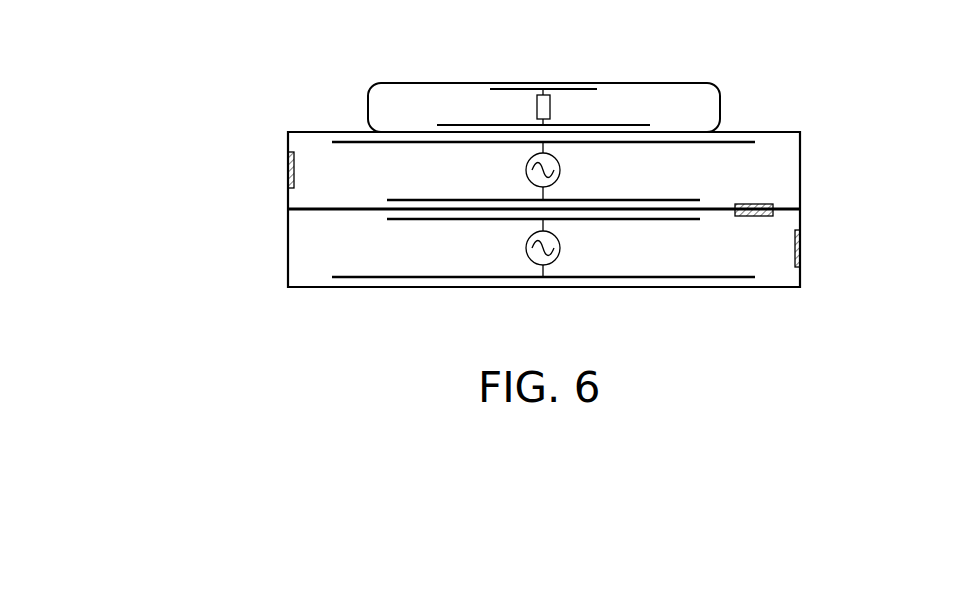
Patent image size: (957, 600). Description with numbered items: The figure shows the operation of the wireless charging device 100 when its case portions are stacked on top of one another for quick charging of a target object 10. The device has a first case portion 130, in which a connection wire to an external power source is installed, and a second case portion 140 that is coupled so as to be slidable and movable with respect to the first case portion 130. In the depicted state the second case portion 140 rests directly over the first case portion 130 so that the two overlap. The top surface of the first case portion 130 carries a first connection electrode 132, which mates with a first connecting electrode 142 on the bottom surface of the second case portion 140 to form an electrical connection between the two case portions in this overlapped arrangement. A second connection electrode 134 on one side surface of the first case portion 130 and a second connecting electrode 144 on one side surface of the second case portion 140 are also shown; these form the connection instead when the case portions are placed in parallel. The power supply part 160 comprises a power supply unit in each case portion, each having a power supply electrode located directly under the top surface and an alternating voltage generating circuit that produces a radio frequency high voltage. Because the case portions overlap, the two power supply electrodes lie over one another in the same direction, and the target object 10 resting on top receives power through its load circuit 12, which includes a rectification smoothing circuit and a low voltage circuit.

The wireless charging device 100 is at (307, 49).
The target object 10 is at (715, 97).
The load circuit 12 is at (550, 108).
The first case portion 130 is at (797, 150).
The first connection electrode 132 is at (762, 203).
The second connection electrode 134 is at (287, 172).
The second case portion 140 is at (792, 278).
The first connecting electrode 142 is at (765, 218).
The second connecting electrode 144 is at (802, 253).
The power supply part 160 is at (415, 221).